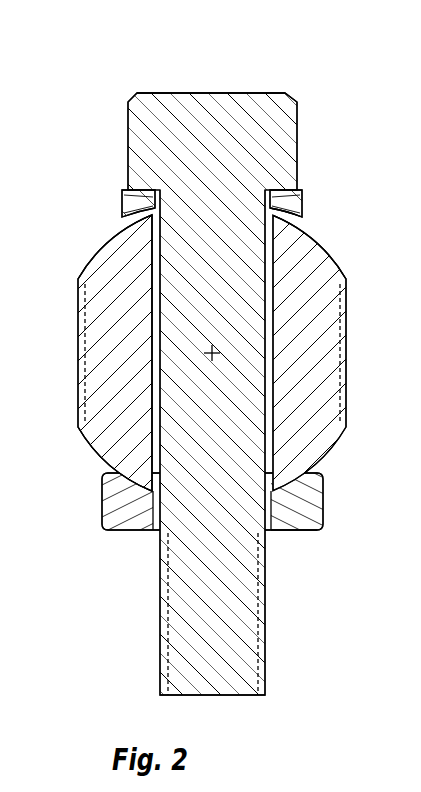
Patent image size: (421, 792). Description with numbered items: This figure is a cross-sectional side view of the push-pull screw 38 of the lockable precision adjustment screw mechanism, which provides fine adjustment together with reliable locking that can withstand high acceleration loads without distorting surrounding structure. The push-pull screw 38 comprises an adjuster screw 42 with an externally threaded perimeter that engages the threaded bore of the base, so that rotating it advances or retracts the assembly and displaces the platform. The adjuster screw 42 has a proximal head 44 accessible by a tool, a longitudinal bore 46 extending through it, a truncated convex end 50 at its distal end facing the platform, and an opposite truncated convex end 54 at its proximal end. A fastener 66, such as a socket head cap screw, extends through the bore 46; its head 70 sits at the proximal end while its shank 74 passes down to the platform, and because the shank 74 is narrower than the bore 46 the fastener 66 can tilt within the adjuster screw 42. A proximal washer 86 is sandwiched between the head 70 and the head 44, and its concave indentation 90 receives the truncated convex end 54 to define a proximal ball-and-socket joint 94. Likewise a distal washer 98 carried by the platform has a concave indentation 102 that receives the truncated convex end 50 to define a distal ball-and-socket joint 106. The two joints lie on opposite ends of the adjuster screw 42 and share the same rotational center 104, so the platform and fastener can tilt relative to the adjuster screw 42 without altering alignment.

The push-pull screw 38 is at (283, 574).
The adjuster screw 42 is at (110, 340).
The head 44 is at (109, 240).
The bore 46 is at (148, 397).
The truncated convex end 50 is at (100, 456).
The truncated convex end 54 is at (284, 221).
The fastener 66 is at (180, 93).
The head 70 is at (249, 122).
The shank 74 is at (203, 618).
The proximal washer 86 is at (131, 208).
The concave indentation 90 is at (272, 214).
The proximal ball-and-socket joint 94 is at (323, 220).
The distal washer 98 is at (308, 504).
The concave indentation 102 is at (292, 530).
The rotational center 104 is at (128, 249).
The distal ball-and-socket joint 106 is at (130, 497).